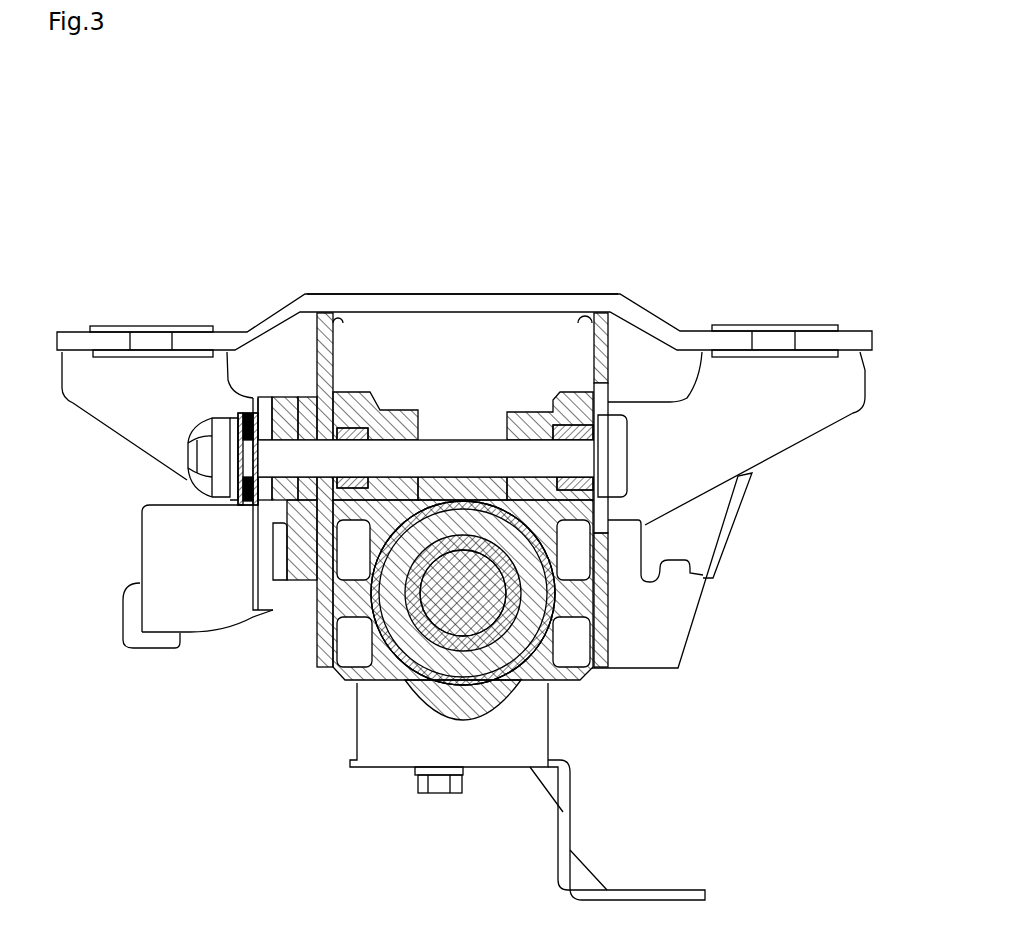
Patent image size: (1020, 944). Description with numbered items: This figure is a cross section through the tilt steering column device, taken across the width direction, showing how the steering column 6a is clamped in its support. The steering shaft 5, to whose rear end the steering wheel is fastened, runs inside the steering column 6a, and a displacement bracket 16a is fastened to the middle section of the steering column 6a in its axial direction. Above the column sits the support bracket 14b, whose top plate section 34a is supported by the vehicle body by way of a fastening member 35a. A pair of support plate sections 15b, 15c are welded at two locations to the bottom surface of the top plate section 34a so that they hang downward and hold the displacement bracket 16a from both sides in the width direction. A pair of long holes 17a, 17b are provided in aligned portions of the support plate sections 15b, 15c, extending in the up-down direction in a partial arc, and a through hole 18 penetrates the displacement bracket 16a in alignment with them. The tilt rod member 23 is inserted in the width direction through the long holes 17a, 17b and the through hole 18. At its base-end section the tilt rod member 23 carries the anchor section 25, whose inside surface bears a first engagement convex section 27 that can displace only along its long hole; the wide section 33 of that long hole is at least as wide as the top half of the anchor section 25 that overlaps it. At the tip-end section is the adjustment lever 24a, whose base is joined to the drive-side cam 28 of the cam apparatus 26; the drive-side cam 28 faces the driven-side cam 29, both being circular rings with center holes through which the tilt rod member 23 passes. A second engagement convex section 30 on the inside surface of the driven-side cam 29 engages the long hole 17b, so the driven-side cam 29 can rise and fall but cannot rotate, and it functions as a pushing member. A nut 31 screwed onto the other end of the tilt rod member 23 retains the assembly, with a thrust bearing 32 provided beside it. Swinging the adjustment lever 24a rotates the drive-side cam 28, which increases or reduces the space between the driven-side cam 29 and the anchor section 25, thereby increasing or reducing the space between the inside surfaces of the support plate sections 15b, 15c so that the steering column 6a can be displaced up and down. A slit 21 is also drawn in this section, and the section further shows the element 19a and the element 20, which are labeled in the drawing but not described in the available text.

The steering shaft 5 is at (465, 593).
The steering column 6a is at (498, 713).
The support bracket 14b is at (600, 293).
The support plate section 15b is at (605, 637).
The support plate section 15c is at (323, 627).
The displacement bracket 16a is at (560, 392).
The long hole 17a is at (645, 532).
The long hole 17b is at (287, 505).
The through hole 18 is at (425, 432).
The motor flange 19a is at (520, 685).
The bearing 20 is at (547, 640).
The slit 21 is at (455, 440).
The tilt rod member 23 is at (540, 412).
The adjustment lever 24a is at (168, 590).
The anchor section 25 is at (623, 437).
The cam apparatus 26 is at (260, 507).
The first engagement convex section 27 is at (612, 500).
The drive-side cam 28 is at (285, 392).
The driven-side cam 29 is at (305, 322).
The second engagement convex section 30 is at (340, 392).
The nut 31 is at (230, 495).
The thrust bearing 32 is at (240, 425).
The wide section 33 is at (617, 392).
The top plate section 34a is at (357, 303).
The fastening member 35a is at (150, 327).